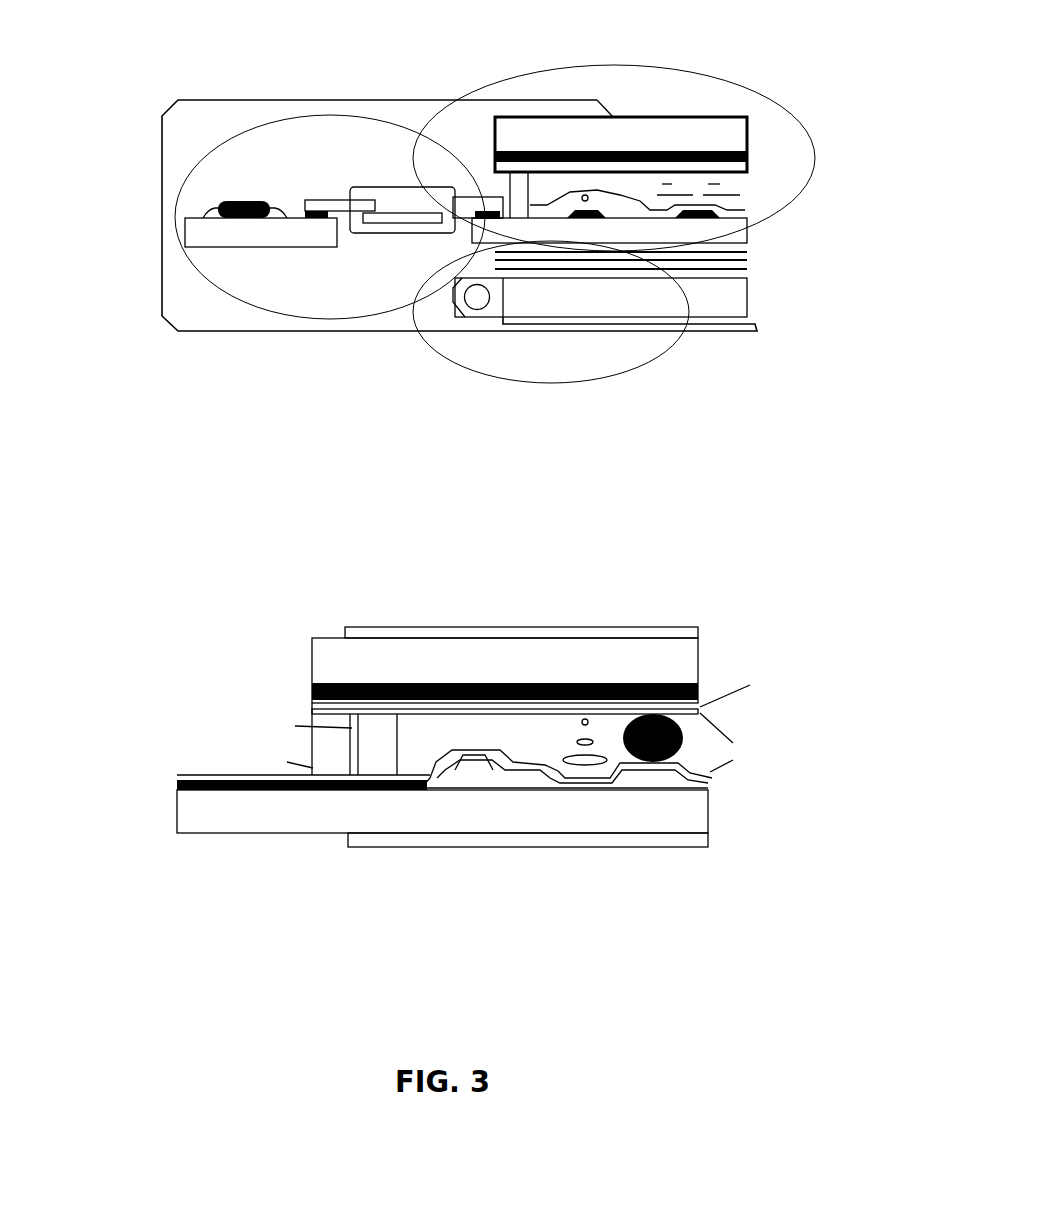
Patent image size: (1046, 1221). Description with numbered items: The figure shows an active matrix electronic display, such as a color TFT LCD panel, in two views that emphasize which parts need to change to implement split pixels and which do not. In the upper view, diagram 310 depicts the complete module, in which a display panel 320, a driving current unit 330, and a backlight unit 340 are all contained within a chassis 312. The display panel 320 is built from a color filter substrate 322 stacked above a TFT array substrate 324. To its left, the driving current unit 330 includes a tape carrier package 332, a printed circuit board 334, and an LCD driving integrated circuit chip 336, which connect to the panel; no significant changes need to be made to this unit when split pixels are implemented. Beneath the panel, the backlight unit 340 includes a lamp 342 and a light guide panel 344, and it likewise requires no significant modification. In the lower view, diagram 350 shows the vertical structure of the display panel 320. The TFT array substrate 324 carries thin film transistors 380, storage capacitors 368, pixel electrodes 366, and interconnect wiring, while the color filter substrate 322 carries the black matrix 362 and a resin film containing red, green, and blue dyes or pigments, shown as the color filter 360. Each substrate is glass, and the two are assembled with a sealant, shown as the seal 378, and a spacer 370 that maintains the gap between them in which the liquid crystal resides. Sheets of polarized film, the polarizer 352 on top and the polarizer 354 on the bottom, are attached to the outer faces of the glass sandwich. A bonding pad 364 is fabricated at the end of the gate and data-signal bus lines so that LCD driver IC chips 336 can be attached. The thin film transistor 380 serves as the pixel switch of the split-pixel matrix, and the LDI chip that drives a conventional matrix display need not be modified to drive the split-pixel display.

The diagram 310 is at (763, 29).
The chassis 312 is at (250, 331).
The display panel 320 is at (583, 70).
The color filter substrate 322 is at (529, 410).
The TFT array substrate 324 is at (462, 525).
The driving current unit 330 is at (250, 130).
The Tape Carrier Package (TCP) 332 is at (316, 200).
The printed circuit board (PCB) 334 is at (215, 237).
The LCD driver IC (LDI) chip 336 is at (405, 220).
The backlight unit 340 is at (463, 371).
The lamp 342 is at (477, 297).
The light guide panel 344 is at (601, 297).
The diagram 350 is at (793, 573).
The polarizer 352 is at (522, 630).
The polarizer 354 is at (418, 840).
The color filter 360 is at (312, 683).
The black matrix 362 is at (312, 695).
The bonding pad 364 is at (178, 778).
The pixel electrode 366 is at (585, 782).
The storage capacitor 368 is at (660, 778).
The spacer 370 is at (670, 762).
The seal 378 is at (373, 744).
The thin film transistor (TFT) 380 is at (478, 763).